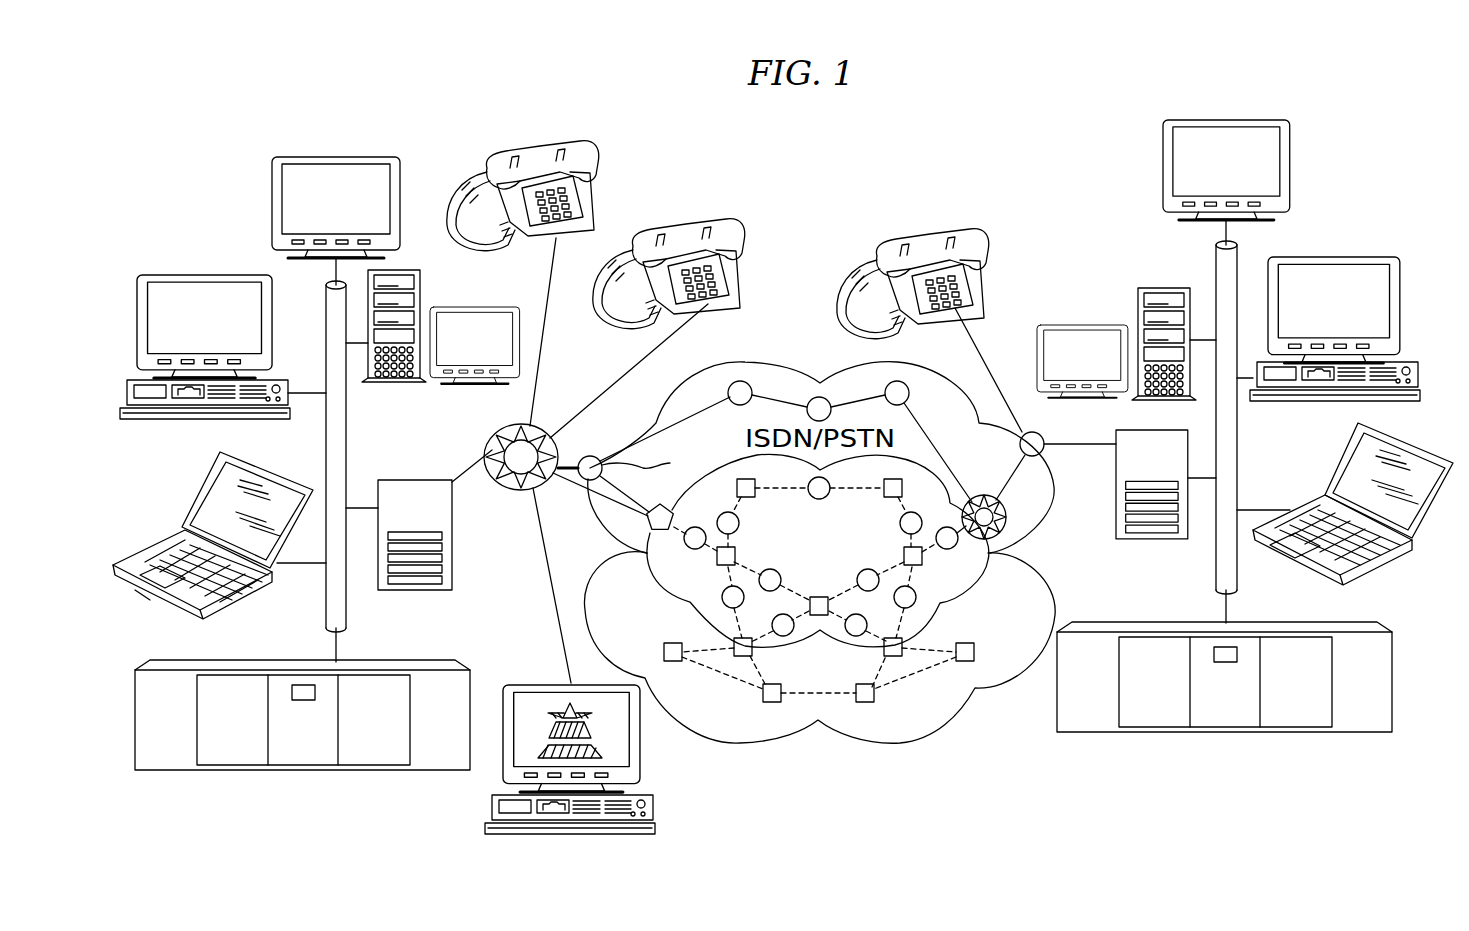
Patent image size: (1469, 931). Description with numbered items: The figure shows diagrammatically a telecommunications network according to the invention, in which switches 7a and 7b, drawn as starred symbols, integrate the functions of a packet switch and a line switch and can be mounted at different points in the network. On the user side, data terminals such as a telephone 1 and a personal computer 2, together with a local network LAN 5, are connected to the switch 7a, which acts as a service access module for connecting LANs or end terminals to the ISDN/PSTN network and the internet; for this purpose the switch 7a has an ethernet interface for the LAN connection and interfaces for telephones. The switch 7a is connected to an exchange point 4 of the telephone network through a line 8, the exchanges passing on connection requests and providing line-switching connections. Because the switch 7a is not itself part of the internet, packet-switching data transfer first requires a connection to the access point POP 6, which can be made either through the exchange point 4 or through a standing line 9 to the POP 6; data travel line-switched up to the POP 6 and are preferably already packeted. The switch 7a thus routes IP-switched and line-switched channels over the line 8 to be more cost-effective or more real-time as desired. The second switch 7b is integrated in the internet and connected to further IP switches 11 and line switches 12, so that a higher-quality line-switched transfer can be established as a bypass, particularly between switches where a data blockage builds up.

The telephone 1 is at (597, 153).
The personal computer 2 is at (438, 383).
The exchange point 4 is at (648, 464).
The local network LAN 5 is at (265, 445).
The access point POP 6 is at (658, 506).
The switch 7a is at (511, 424).
The switch 7b is at (1004, 508).
The line 8 is at (568, 460).
The standing line 9 is at (587, 479).
The IP switches 11 is at (963, 661).
The line switches 12 is at (988, 562).